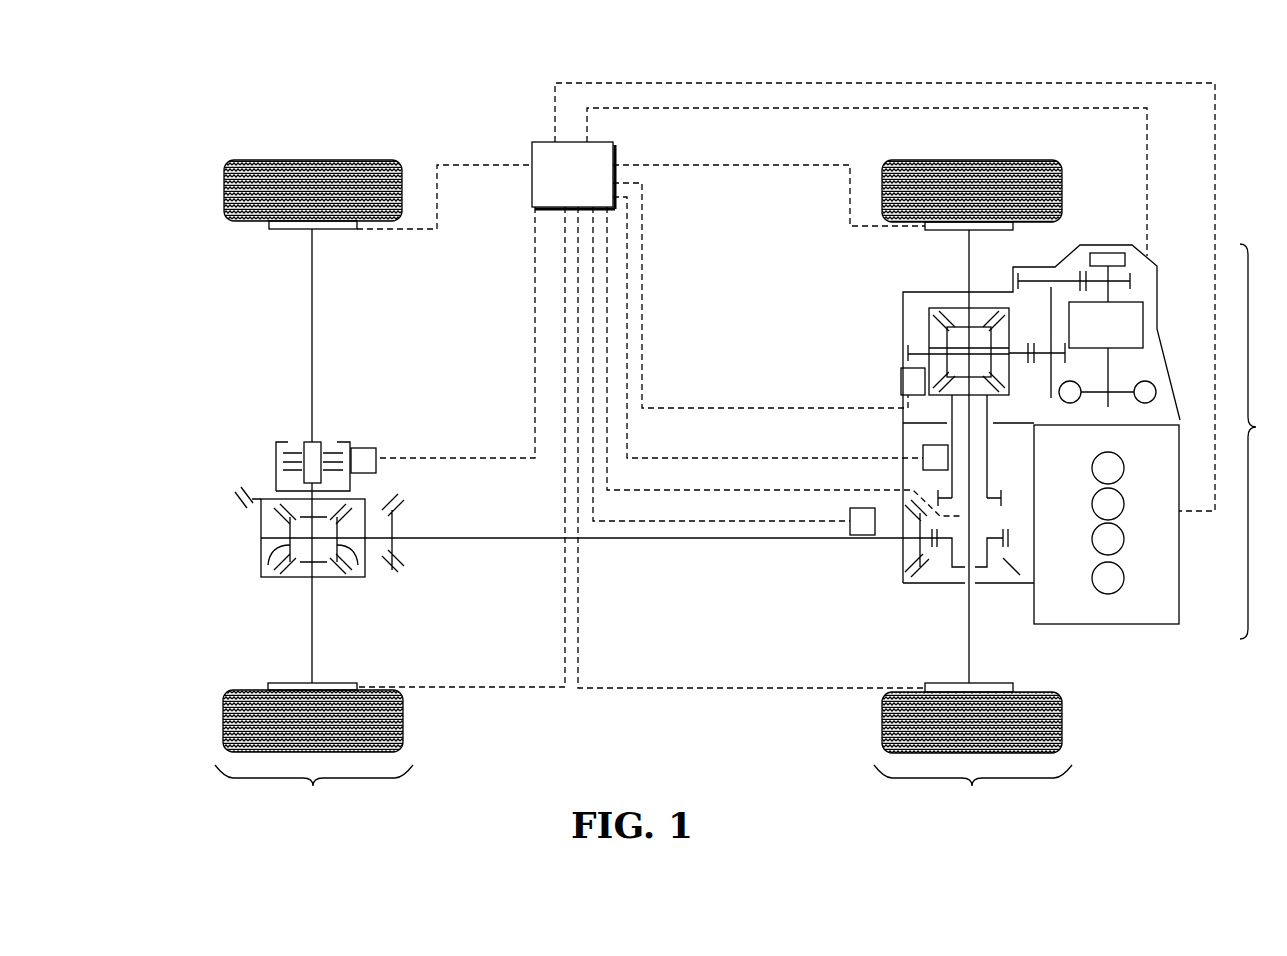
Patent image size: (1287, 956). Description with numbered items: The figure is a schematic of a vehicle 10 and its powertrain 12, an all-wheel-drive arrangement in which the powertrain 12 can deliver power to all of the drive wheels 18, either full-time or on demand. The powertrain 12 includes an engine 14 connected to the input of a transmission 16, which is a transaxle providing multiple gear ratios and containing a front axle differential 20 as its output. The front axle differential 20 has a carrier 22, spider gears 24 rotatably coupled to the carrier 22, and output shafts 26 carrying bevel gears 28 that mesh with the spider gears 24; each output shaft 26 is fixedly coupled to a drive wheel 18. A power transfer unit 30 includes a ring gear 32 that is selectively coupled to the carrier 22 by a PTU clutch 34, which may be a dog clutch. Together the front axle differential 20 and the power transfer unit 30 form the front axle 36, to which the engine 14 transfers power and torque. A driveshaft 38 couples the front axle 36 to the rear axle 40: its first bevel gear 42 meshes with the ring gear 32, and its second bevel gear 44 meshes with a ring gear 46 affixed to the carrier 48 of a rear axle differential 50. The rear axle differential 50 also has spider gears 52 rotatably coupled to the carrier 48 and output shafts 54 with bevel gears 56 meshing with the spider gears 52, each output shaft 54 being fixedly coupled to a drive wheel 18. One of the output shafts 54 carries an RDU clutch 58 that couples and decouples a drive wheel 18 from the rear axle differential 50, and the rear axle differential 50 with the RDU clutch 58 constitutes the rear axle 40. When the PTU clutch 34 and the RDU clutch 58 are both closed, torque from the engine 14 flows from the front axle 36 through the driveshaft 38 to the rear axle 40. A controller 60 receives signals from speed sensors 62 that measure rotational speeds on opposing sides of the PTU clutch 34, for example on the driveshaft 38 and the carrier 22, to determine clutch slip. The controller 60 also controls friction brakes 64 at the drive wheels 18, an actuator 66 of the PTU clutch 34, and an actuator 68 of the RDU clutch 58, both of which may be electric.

The vehicle 10 is at (455, 86).
The vehicle powertrain 12 is at (1260, 441).
The engine 14 is at (1133, 632).
The transmission 16 is at (1160, 252).
The drive wheels 18 is at (224, 192).
The front axle differential 20 is at (937, 326).
The carrier 22 is at (929, 322).
The spider gears 24 is at (945, 355).
The output shafts 26 is at (967, 281).
The bevel gears 28 is at (980, 327).
The power transfer unit 30 is at (940, 572).
The ring gear 32 is at (940, 575).
The power transfer unit clutch 34 is at (1003, 516).
The front axle 36 is at (973, 789).
The driveshaft 38 is at (435, 538).
The rear axle 40 is at (314, 789).
The first bevel gear 42 is at (920, 545).
The second bevel gear 44 is at (393, 553).
The ring gear 46 is at (252, 500).
The carrier 48 is at (348, 573).
The rear axle differential 50 is at (307, 537).
The spider gears 52 is at (280, 560).
The output shafts 54 is at (312, 332).
The bevel gears 56 is at (305, 515).
The rear drive unit clutch 58 is at (358, 418).
The controller 60 is at (542, 142).
The speed sensors 62 is at (901, 382).
The friction brakes 64 is at (280, 231).
The actuator 66 is at (923, 455).
The actuator 68 is at (377, 452).